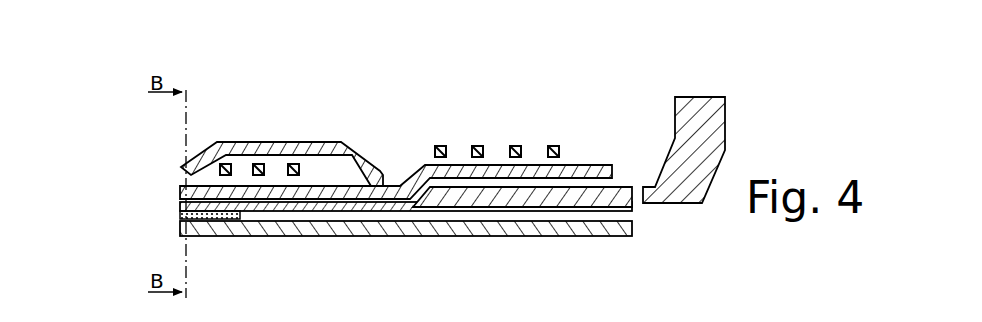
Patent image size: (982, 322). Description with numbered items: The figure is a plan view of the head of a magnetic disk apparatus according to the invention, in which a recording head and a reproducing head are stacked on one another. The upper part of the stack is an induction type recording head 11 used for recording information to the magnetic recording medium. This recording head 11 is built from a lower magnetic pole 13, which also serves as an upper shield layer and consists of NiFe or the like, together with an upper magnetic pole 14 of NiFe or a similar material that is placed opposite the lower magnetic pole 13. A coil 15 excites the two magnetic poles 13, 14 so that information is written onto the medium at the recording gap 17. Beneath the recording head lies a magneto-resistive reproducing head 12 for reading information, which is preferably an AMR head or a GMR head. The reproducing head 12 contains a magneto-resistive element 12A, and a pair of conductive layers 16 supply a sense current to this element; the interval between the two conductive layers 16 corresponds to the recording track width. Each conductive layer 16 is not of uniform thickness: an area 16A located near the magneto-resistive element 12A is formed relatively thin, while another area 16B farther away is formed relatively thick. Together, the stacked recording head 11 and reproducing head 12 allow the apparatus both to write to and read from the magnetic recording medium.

The induction type recording head 11 is at (179, 164).
The magneto-resistive reproducing head 12 is at (176, 220).
The magneto-resistive element 12A is at (241, 218).
The lower magnetic pole 13 is at (410, 173).
The upper magnetic pole 14 is at (264, 141).
The coil 15 is at (292, 164).
The conductive layer 16 is at (594, 200).
The thin area of conductive layer 16A is at (310, 204).
The thick area of conductive layer 16B is at (503, 193).
The recording gap 17 is at (183, 181).